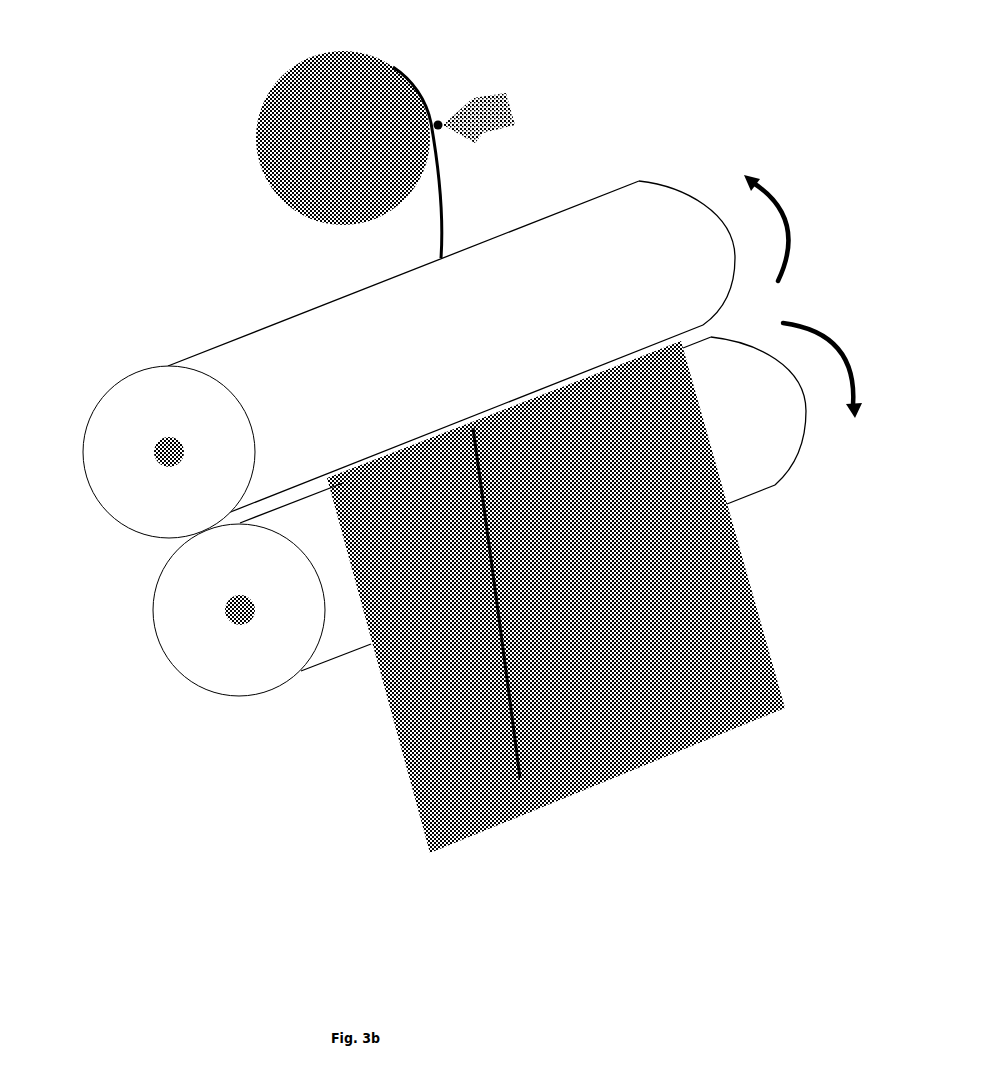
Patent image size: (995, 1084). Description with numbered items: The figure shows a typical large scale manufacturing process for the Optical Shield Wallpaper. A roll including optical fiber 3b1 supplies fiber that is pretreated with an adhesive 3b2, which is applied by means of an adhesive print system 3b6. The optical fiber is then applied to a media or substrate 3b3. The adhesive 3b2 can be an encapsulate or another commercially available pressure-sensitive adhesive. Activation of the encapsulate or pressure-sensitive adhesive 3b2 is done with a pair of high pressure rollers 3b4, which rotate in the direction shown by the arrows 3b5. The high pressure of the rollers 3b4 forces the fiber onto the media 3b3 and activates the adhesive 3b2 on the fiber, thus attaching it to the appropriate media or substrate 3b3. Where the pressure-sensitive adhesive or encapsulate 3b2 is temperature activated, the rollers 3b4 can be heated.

The roll including optical fiber 3b1 is at (291, 53).
The adhesive 3b2 is at (429, 104).
The media or substrate 3b3 is at (391, 734).
The high pressure rollers 3b4 is at (113, 515).
The arrows 3b5 is at (803, 296).
The adhesive print system 3b6 is at (498, 84).